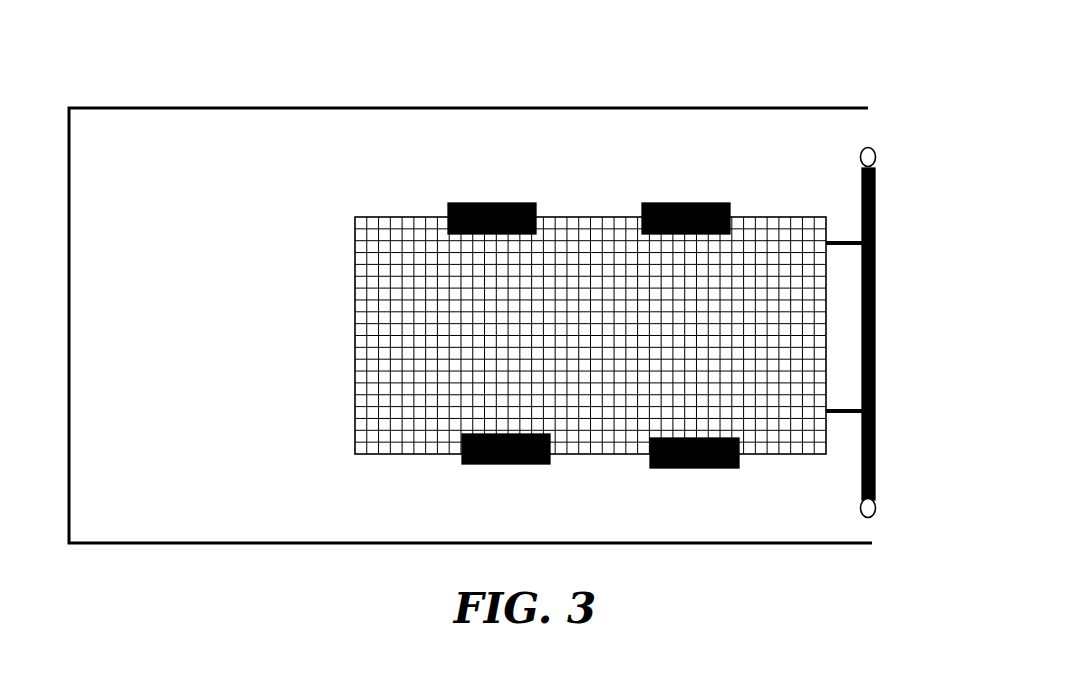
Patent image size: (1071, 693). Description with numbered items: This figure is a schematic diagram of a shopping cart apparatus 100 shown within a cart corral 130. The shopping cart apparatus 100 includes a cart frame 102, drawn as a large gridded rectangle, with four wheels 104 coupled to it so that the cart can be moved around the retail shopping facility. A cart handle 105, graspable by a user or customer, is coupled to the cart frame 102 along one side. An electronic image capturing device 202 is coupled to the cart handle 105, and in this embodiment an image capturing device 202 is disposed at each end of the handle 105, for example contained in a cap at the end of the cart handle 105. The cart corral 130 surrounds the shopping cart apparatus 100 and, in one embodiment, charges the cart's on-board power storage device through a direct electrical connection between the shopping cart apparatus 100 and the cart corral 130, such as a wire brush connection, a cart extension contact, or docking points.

The shopping cart apparatus 100 is at (590, 172).
The cart frame 102 is at (762, 217).
The wheels 104 is at (490, 203).
The cart handle 105 is at (875, 350).
The cart corral 130 is at (300, 108).
The electronic image capturing device 202 is at (871, 148).